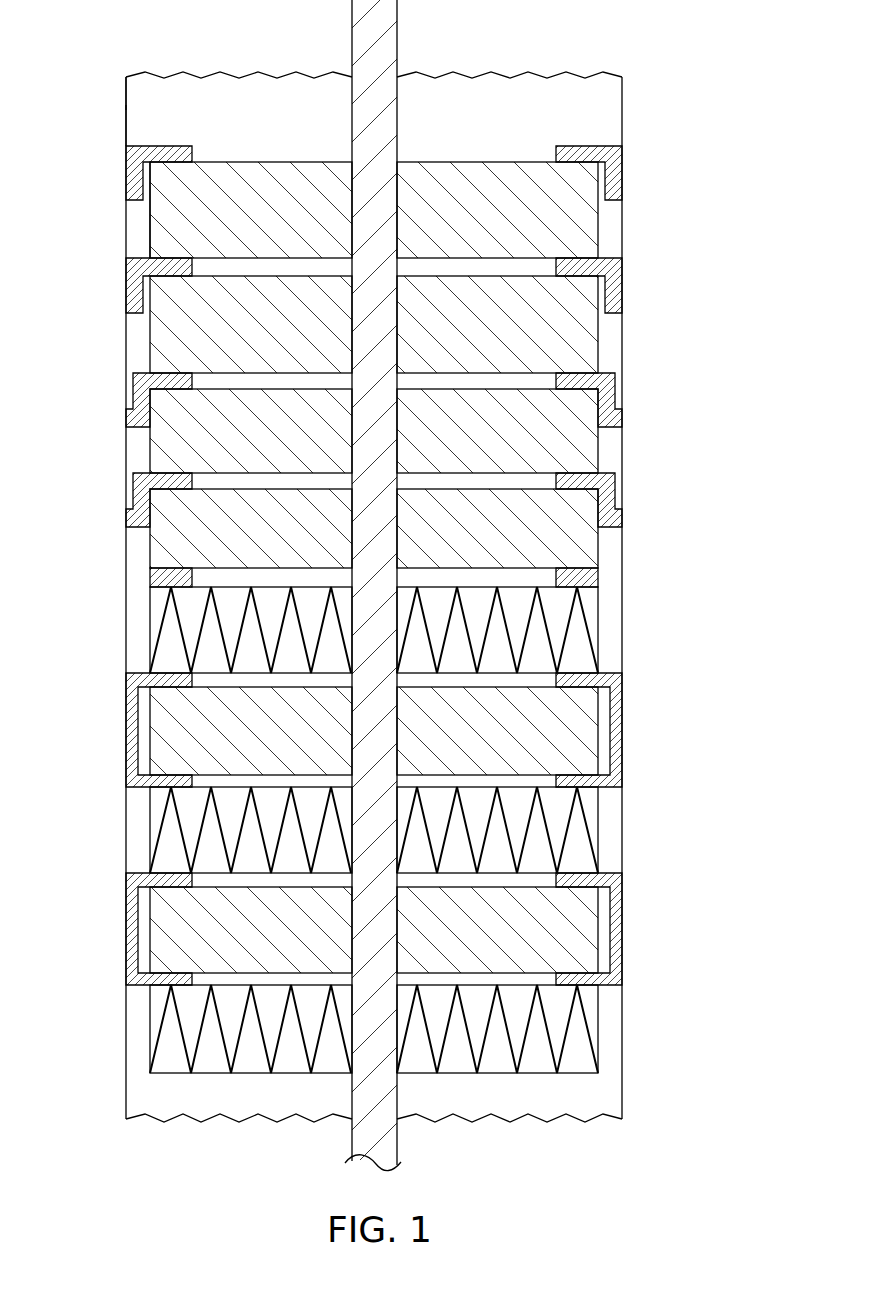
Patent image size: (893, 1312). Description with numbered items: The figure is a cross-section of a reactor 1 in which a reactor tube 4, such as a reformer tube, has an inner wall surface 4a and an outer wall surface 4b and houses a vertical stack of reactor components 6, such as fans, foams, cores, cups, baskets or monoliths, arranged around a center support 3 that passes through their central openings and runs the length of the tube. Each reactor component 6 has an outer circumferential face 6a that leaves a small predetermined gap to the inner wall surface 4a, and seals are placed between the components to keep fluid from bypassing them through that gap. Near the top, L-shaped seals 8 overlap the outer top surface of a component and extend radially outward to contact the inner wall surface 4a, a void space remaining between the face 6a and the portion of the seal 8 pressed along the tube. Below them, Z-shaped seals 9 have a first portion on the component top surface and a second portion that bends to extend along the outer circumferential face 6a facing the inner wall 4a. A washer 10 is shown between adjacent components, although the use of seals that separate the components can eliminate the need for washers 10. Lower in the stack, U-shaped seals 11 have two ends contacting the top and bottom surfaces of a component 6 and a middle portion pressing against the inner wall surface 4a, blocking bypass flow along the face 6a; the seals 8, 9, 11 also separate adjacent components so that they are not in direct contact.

The reactor 1 is at (732, 150).
The center support 3 is at (387, 13).
The reactor tube 4 is at (621, 101).
The inner wall surface 4a is at (126, 110).
The outer wall surface 4b is at (126, 103).
The reactor component 6 is at (575, 218).
The outer circumferential face 6a is at (150, 228).
The seal 8 is at (135, 176).
The seal 9 is at (614, 415).
The washers 10 is at (590, 578).
The seal 11 is at (615, 722).